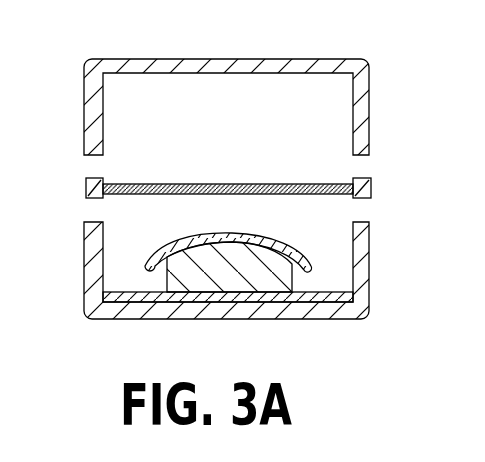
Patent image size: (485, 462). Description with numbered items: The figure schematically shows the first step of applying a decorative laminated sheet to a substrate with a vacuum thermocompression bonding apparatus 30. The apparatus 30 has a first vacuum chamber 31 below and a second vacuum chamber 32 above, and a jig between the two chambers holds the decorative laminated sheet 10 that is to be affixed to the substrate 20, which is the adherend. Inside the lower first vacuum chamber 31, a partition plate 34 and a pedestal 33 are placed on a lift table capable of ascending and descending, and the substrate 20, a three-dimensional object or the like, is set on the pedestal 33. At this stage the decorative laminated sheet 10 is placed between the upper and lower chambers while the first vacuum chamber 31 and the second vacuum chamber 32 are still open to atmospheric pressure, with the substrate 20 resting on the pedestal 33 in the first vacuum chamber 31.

The vacuum thermocompression bonding apparatus 30 is at (204, 159).
The second vacuum chamber 32 is at (110, 108).
The first vacuum chamber 31 is at (102, 263).
The decorative laminated sheet 10 is at (133, 187).
The substrate 20 is at (309, 254).
The pedestal 33 is at (250, 278).
The partition plate 34 is at (141, 297).